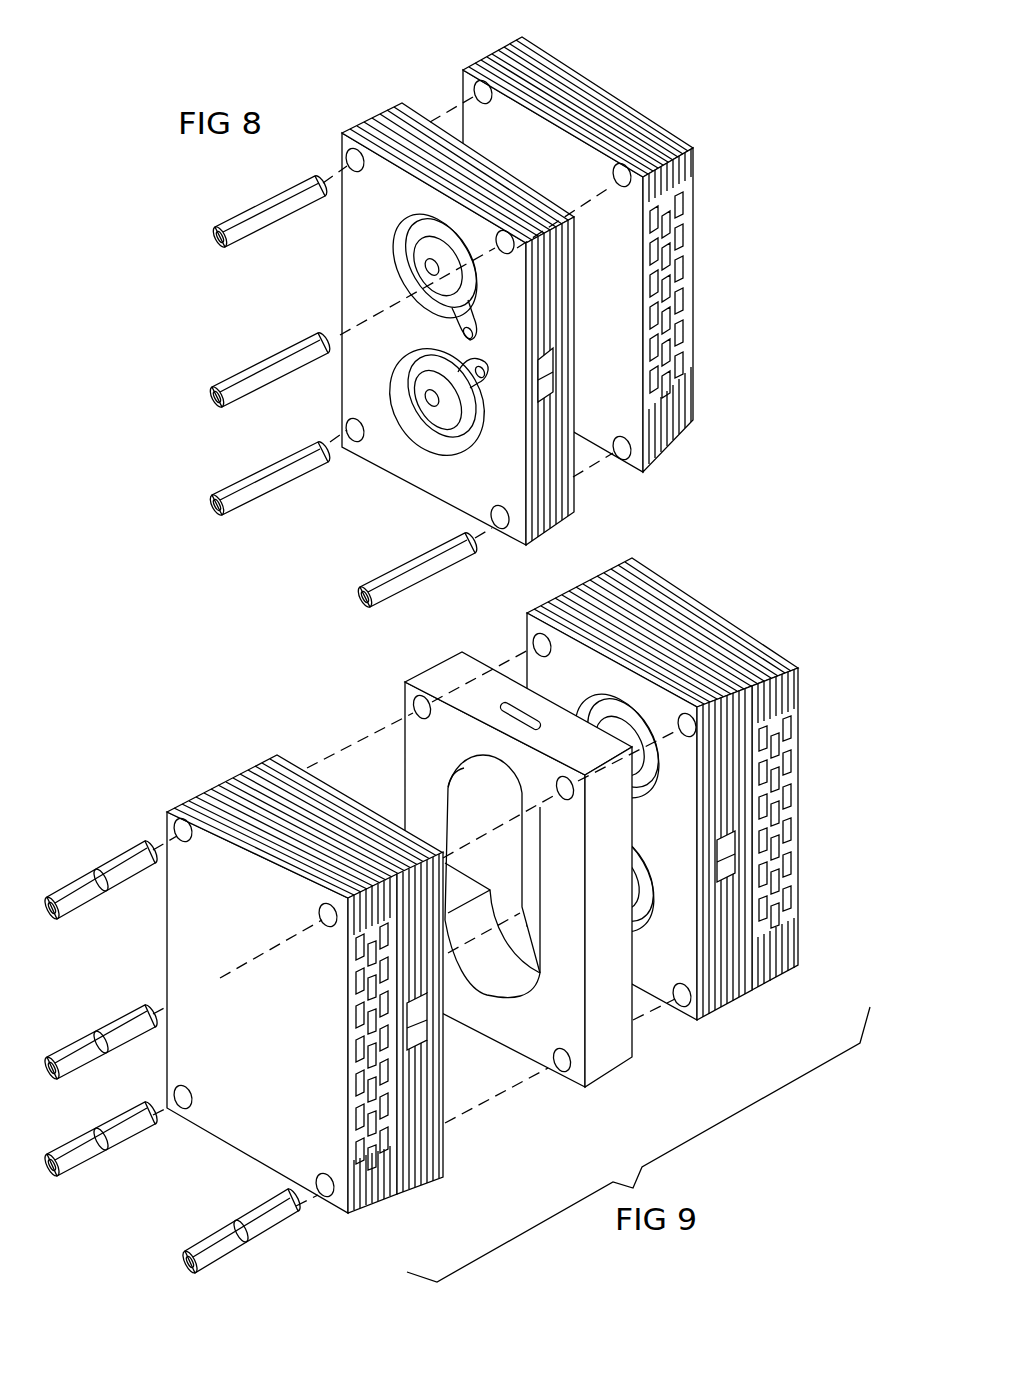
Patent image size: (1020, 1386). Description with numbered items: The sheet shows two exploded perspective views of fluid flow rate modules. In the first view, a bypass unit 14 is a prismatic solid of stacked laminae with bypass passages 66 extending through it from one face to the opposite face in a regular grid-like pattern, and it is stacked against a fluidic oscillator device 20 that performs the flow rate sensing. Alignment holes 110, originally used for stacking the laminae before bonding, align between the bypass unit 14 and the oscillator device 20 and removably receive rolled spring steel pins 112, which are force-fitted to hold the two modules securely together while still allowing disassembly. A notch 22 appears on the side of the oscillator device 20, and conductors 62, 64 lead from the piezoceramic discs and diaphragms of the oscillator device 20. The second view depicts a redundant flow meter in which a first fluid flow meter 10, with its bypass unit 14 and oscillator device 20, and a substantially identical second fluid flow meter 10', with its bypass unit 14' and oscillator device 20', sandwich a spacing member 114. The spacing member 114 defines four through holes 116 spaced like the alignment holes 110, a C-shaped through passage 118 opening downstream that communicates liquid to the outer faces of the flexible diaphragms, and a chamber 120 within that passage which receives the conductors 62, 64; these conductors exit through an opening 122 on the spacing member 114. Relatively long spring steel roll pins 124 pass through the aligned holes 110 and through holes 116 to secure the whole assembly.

In FIG. 9, the first fluid flow meter 10 is at (305, 947).
In FIG. 9, the second fluid flow meter 10' is at (662, 764).
In FIG. 8, the bypass unit 14 is at (578, 238).
In FIG. 9, the bypass unit 14 is at (305, 975).
In FIG. 9, the bypass unit 14' is at (662, 774).
In FIG. 8, the fluidic oscillator device 20 is at (458, 308).
In FIG. 9, the fluidic oscillator device 20 is at (361, 954).
In FIG. 9, the fluidic oscillator device 20' is at (639, 790).
In FIG. 8, the notch 22 is at (558, 382).
In FIG. 8, the conductor 62 is at (455, 326).
In FIG. 8, the conductor 64 is at (430, 400).
In FIG. 8, the bypass passages 66 is at (680, 211).
In FIG. 8, the alignment holes 110 is at (480, 90).
In FIG. 9, the alignment holes 110 is at (544, 650).
In FIG. 8, the rolled spring steel pin 112 is at (267, 210).
In FIG. 9, the spacing member 114 is at (610, 1060).
In FIG. 9, the through holes 116 is at (425, 712).
In FIG. 9, the C-shaped through passage 118 is at (465, 782).
In FIG. 9, the chamber 120 is at (535, 870).
In FIG. 9, the opening 122 is at (505, 705).
In FIG. 9, the spring steel roll pins 124 is at (72, 853).